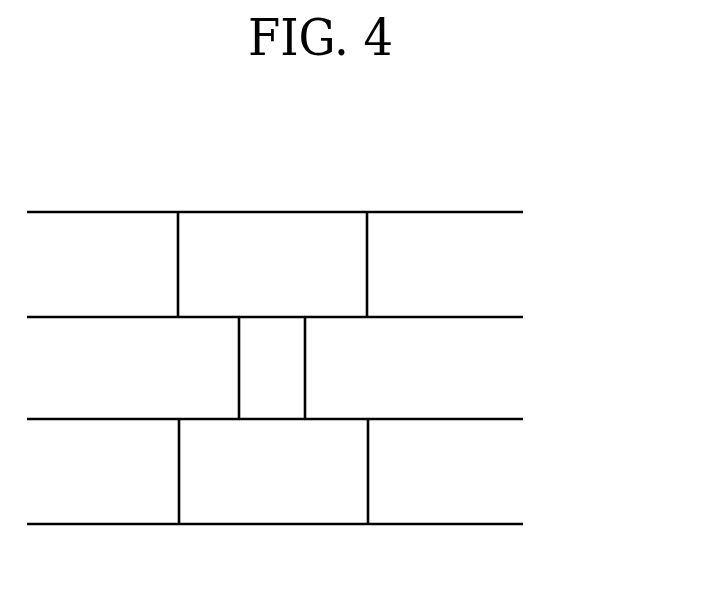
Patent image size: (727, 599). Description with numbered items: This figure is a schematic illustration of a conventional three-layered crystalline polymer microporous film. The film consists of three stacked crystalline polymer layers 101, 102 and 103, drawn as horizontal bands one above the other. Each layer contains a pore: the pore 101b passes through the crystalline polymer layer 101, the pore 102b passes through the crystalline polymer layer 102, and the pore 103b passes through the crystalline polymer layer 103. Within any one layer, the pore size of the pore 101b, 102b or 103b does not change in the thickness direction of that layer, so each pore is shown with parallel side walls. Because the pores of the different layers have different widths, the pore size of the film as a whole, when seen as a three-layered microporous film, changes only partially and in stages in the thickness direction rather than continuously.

The crystalline polymer layer 101 is at (512, 268).
The pore 101b is at (163, 265).
The crystalline polymer layer 102 is at (513, 373).
The pore 102b is at (313, 380).
The crystalline polymer layer 103 is at (513, 481).
The pore 103b is at (165, 475).